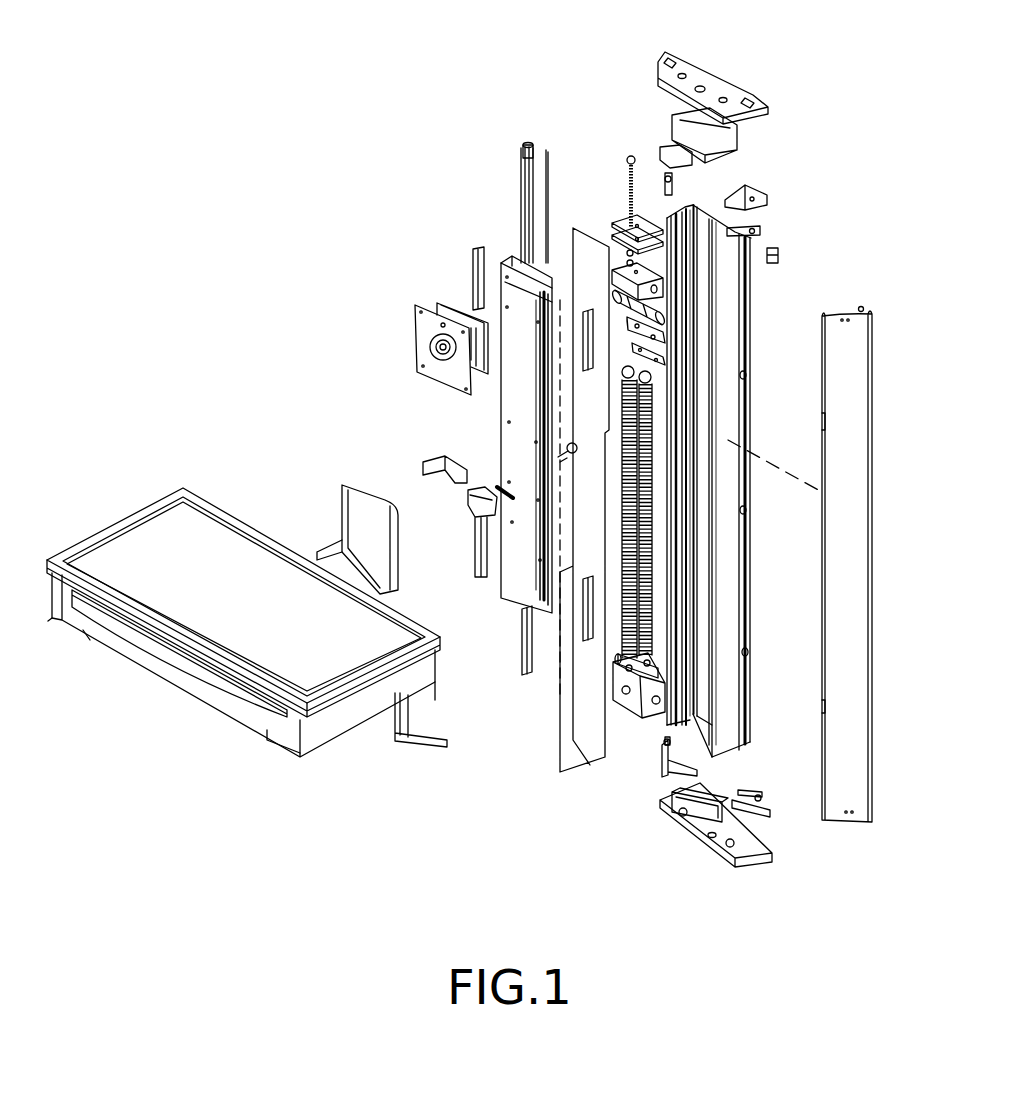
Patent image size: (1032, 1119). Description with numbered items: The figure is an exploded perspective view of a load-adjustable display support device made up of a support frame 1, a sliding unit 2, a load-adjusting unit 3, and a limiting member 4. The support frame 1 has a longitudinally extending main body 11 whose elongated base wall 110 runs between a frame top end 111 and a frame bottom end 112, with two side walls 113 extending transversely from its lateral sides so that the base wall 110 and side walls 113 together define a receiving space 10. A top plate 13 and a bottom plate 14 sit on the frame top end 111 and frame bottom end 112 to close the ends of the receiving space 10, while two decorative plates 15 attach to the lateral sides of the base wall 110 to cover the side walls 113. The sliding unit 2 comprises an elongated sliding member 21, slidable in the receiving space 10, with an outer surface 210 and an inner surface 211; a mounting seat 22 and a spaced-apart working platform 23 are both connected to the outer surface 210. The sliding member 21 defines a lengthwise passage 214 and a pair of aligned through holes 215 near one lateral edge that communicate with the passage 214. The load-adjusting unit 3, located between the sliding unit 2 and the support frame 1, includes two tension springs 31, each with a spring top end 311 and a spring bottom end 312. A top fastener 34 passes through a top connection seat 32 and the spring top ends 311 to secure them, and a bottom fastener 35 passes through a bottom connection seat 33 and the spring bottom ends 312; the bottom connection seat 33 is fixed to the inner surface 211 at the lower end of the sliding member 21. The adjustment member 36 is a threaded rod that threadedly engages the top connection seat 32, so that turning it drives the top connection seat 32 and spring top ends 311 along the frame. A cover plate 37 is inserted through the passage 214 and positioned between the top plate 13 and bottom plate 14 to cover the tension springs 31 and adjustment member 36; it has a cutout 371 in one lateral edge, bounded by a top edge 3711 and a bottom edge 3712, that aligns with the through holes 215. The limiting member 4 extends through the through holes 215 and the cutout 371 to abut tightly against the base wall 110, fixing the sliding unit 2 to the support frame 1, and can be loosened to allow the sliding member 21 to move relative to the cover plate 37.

The support frame 1 is at (775, 233).
The receiving space 10 is at (705, 673).
The main body 11 is at (752, 345).
The base wall 110 is at (745, 222).
The frame top end 111 is at (710, 205).
The frame bottom end 112 is at (700, 752).
The side walls 113 is at (692, 507).
The top plate 13 is at (720, 78).
The bottom plate 14 is at (693, 862).
The decorative plates 15 is at (520, 190).
The sliding unit 2 is at (395, 283).
The sliding member 21 is at (515, 398).
The outer surface 210 is at (513, 293).
The inner surface 211 is at (546, 170).
The passage 214 is at (512, 272).
The through holes 215 is at (537, 472).
The mounting seat 22 is at (415, 330).
The working platform 23 is at (112, 525).
The load-adjusting unit 3 is at (620, 633).
The tension springs 31 is at (622, 535).
The spring top end 311 is at (660, 384).
The spring bottom end 312 is at (628, 705).
The top connection seat 32 is at (614, 266).
The bottom connection seat 33 is at (630, 700).
The top fastener 34 is at (662, 336).
The bottom fastener 35 is at (652, 677).
The adjustment member 36 is at (634, 160).
The cover plate 37 is at (580, 713).
The cutout 371 is at (538, 545).
The top edge 3711 is at (585, 373).
The bottom edge 3712 is at (590, 620).
The limiting member 4 is at (465, 512).